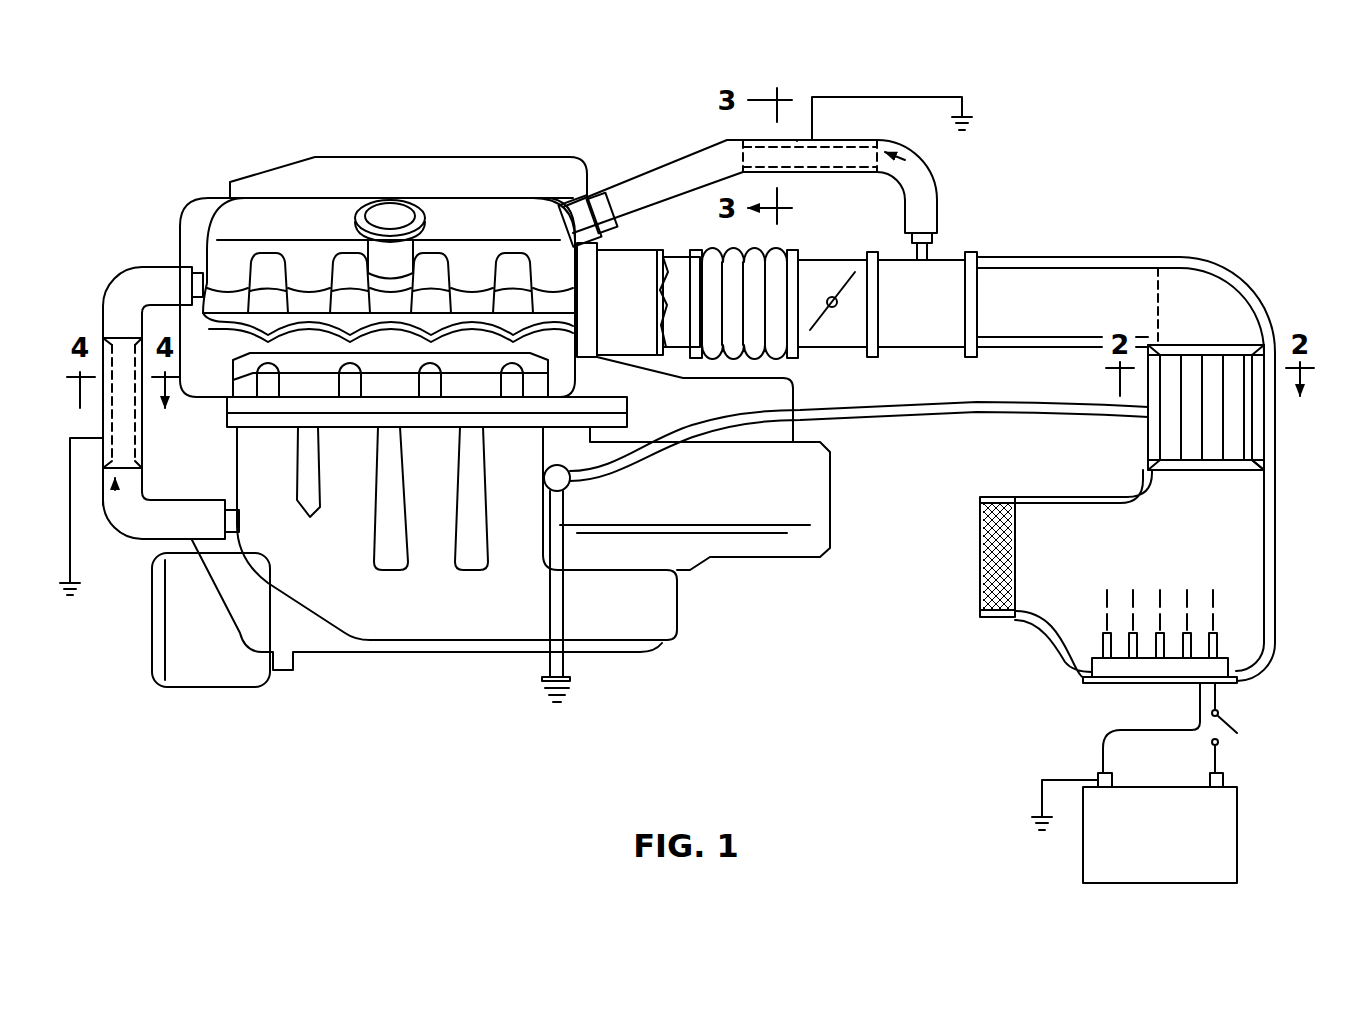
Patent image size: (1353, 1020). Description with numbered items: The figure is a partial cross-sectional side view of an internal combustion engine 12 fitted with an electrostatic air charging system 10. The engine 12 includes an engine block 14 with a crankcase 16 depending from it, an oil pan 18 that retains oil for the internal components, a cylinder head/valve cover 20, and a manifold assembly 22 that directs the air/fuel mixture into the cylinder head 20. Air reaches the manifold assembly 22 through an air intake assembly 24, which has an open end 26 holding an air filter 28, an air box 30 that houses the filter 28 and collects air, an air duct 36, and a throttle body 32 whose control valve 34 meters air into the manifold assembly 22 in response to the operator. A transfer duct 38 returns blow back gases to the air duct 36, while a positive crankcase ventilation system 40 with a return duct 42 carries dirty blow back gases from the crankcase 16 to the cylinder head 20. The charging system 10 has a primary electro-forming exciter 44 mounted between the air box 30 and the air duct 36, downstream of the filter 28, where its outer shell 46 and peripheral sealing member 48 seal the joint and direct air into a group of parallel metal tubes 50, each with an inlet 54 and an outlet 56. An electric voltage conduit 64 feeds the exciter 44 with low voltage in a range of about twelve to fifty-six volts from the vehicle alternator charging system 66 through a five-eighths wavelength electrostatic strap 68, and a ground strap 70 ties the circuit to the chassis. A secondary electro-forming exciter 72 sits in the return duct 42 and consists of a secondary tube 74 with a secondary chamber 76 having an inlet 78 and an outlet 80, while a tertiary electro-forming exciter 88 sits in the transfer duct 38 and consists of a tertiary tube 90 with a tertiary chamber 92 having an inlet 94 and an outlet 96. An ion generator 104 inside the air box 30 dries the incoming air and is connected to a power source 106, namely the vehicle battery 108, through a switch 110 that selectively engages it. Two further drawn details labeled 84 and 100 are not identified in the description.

The electrostatic air charging system 10 is at (1102, 172).
The internal combustion engine 12 is at (247, 130).
The engine block 14 is at (382, 623).
The crankcase 16 is at (310, 628).
The oil pan 18 is at (197, 663).
The cylinder head/valve cover 20 is at (272, 213).
The manifold assembly 22 is at (203, 223).
The air intake assembly 24 is at (1172, 243).
The open end 26 is at (972, 591).
The air filter 28 is at (978, 552).
The air box 30 is at (1037, 522).
The throttle body 32 is at (958, 240).
The control valve 34 is at (820, 273).
The air duct 36 is at (1040, 257).
The transfer duct 38 is at (648, 185).
The positive crankcase ventilation (PCV) system 40 is at (110, 274).
The return duct 42 is at (133, 522).
The primary electro-forming exciter (PEFE) 44 is at (1286, 405).
The outer shell 46 is at (1276, 430).
The peripheral sealing member 48 is at (1223, 477).
The tubes 50 is at (1170, 377).
The inlet 54 is at (1248, 477).
The outlet 56 is at (1232, 360).
The electric voltage conduit 64 is at (908, 430).
The alternator charging system 66 is at (765, 545).
The electrostatic strap 68 is at (852, 417).
The ground strap 70 is at (567, 603).
The secondary electro-forming exciter (SEFE) 72 is at (99, 327).
The secondary tube 74 is at (107, 432).
The secondary chamber 76 is at (103, 505).
The inlet 78 is at (115, 480).
The outlet 80 is at (120, 335).
The ground connection 84 is at (55, 580).
The tertiary electro-forming exciter (TEFE) 88 is at (795, 127).
The tertiary tube 90 is at (840, 145).
The tertiary chamber 92 is at (907, 158).
The inlet 94 is at (743, 152).
The outlet 96 is at (895, 180).
The ground wire 100 is at (955, 97).
The ion generator 104 is at (1068, 681).
The power source 106 is at (1245, 833).
The battery 108 is at (1083, 862).
The switch 110 is at (1222, 713).